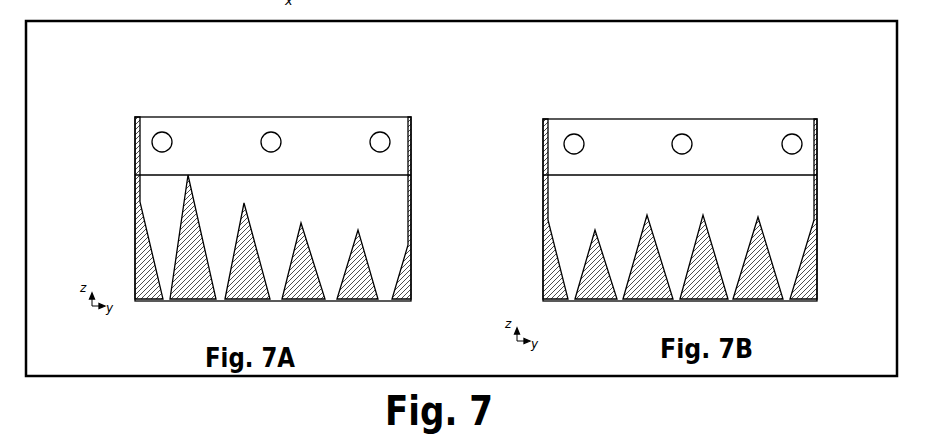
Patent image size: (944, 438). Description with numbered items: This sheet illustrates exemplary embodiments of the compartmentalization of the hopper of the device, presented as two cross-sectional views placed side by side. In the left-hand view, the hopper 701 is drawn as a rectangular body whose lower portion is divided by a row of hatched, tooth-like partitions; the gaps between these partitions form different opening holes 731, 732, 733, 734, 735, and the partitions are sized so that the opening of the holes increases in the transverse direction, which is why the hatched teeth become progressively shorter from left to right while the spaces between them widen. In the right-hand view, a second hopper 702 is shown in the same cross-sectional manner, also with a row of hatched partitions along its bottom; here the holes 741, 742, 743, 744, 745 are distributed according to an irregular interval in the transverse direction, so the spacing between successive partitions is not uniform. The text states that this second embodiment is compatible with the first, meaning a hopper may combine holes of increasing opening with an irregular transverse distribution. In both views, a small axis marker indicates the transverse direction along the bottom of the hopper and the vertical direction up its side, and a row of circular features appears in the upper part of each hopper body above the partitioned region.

In FIG. 7A, the hopper 701 is at (170, 97).
In FIG. 7B, the hopper 702 is at (725, 90).
In FIG. 7A, the opening hole 731 is at (165, 302).
In FIG. 7A, the opening hole 732 is at (220, 302).
In FIG. 7A, the opening hole 733 is at (276, 302).
In FIG. 7A, the opening hole 734 is at (331, 302).
In FIG. 7A, the opening hole 735 is at (385, 302).
In FIG. 7B, the hole 741 is at (571, 302).
In FIG. 7B, the hole 742 is at (620, 302).
In FIG. 7B, the hole 743 is at (676, 302).
In FIG. 7B, the hole 744 is at (730, 302).
In FIG. 7B, the hole 745 is at (786, 302).